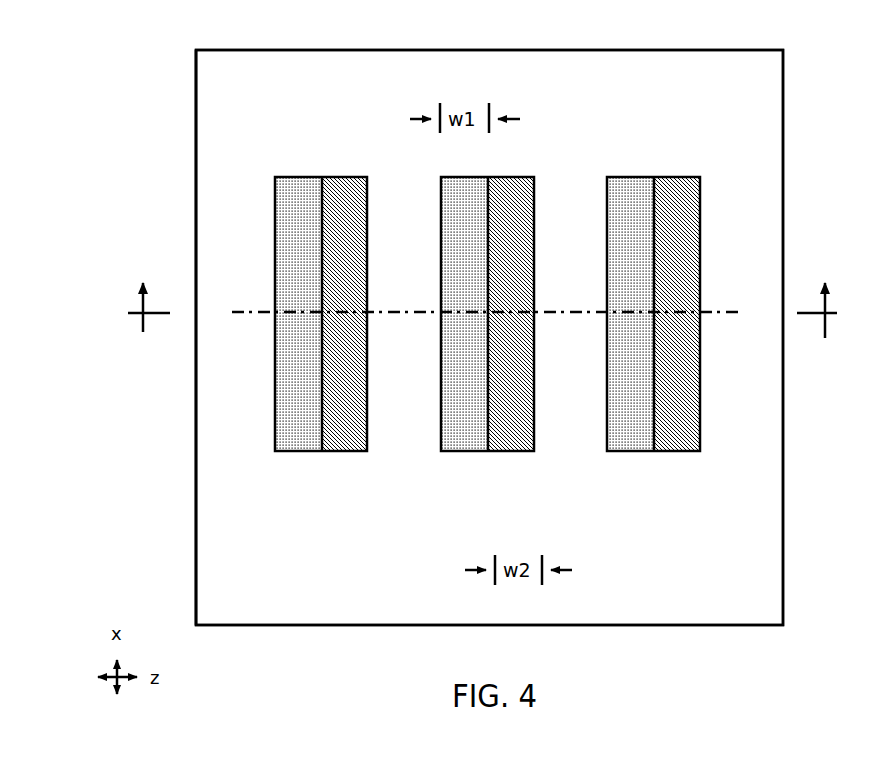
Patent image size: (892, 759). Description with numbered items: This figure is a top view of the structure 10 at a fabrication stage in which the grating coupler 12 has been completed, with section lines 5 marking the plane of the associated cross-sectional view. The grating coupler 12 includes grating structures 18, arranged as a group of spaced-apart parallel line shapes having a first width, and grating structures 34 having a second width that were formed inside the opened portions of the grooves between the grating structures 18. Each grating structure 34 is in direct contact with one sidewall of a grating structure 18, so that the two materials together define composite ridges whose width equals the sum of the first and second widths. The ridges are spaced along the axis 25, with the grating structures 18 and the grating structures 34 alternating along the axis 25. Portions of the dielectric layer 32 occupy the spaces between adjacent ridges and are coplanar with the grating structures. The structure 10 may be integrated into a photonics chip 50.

The photonics chip 50 is at (125, 98).
The structure 10 is at (276, 110).
The grating coupler 12 is at (675, 149).
The grating structures 18 is at (293, 400).
The grating structures 34 is at (335, 395).
The axis 25 is at (720, 315).
The dielectric layer 32 is at (233, 491).
The section line 5 is at (482, 283).